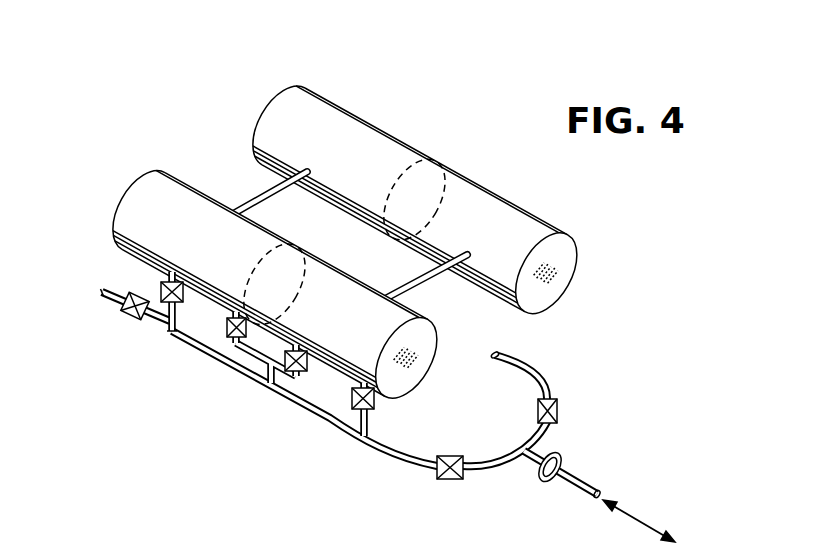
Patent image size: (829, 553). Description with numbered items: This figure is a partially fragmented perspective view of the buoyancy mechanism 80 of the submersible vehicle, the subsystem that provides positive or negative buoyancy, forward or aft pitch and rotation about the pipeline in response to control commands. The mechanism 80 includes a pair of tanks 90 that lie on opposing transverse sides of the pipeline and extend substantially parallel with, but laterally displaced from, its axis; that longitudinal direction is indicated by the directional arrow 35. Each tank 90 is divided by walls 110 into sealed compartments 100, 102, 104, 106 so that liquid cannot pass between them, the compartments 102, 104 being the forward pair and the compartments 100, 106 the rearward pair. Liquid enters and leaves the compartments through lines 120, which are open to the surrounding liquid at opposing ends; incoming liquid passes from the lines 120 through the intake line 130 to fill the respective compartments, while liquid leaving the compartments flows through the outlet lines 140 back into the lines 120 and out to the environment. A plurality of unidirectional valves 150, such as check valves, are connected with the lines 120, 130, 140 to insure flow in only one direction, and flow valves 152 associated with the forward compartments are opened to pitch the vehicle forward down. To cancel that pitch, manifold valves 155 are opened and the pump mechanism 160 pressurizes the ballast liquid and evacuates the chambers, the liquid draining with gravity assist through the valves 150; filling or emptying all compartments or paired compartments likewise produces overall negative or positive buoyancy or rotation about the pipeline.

The buoyancy mechanism 80 is at (220, 115).
The tanks 90 is at (273, 100).
The sealed compartment 100 is at (258, 248).
The sealed compartment 102 is at (375, 335).
The sealed compartment 104 is at (527, 237).
The sealed compartment 106 is at (341, 132).
The walls 110 is at (424, 193).
The lines 120 is at (432, 473).
The intake line 130 is at (170, 314).
The outlet lines 140 is at (266, 378).
The unidirectional valves 150 is at (160, 290).
The flow valves 152 is at (130, 315).
The manifold valves 155 is at (468, 466).
The pump mechanism 160 is at (553, 462).
The directional arrow 35 is at (638, 525).